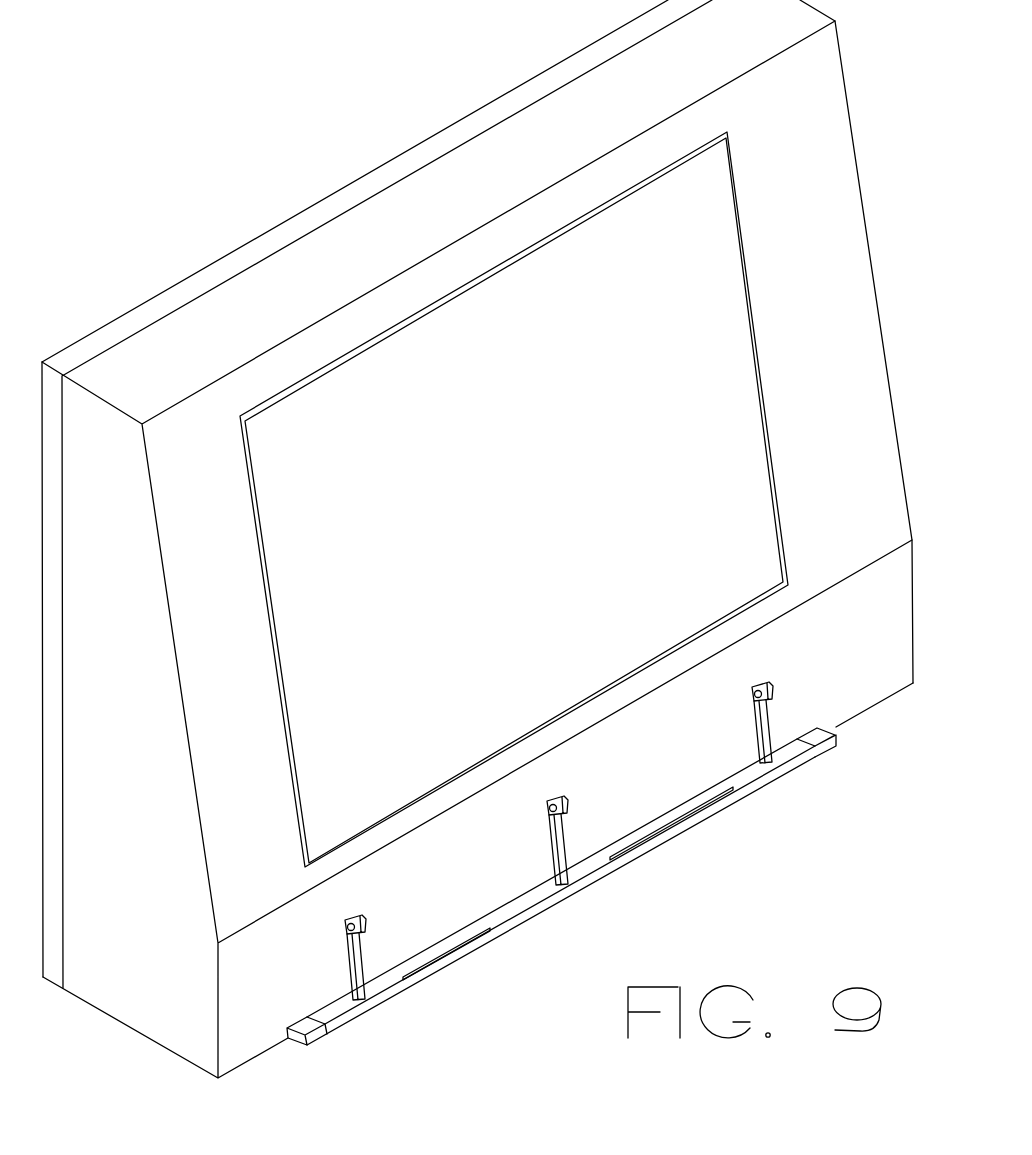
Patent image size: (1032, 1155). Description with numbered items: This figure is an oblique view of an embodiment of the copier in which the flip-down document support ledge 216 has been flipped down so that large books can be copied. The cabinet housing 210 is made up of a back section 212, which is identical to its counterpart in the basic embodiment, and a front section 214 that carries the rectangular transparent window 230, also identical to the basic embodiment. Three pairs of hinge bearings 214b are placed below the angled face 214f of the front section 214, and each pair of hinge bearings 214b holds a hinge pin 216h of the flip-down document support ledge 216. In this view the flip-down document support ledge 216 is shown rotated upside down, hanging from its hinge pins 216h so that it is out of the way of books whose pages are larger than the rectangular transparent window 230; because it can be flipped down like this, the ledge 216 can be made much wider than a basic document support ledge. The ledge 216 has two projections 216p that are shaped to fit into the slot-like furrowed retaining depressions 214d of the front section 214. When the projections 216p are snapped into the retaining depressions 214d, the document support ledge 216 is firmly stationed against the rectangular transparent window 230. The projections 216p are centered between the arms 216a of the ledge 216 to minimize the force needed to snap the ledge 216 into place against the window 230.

The cabinet housing 210 is at (319, 164).
The back section 212 is at (164, 293).
The front section 214 is at (162, 1040).
The angled face 214f is at (844, 75).
The retaining depressions 214d is at (650, 668).
The hinge bearings 214b is at (348, 938).
The hinge pin 216h is at (343, 928).
The arms 216a is at (345, 973).
The flip-down document support ledge 216 is at (762, 783).
The projections 216p is at (675, 823).
The rectangular transparent window 230 is at (567, 527).